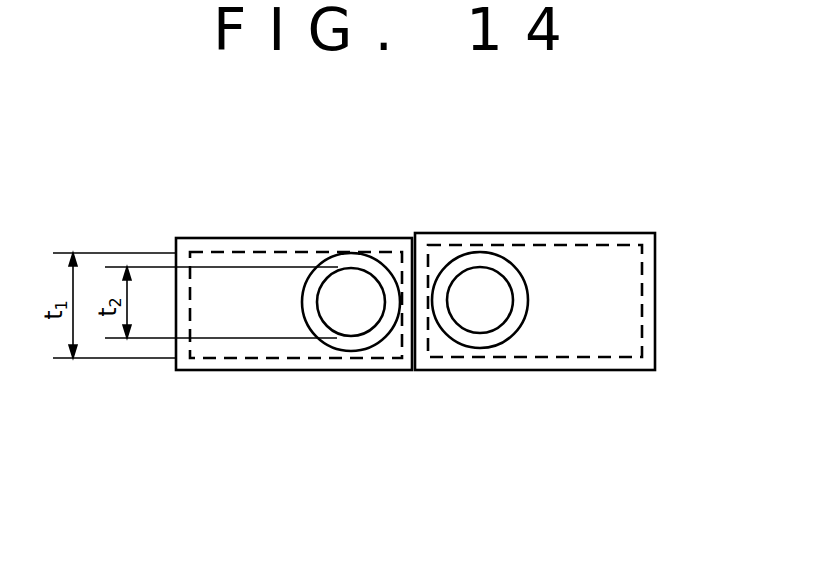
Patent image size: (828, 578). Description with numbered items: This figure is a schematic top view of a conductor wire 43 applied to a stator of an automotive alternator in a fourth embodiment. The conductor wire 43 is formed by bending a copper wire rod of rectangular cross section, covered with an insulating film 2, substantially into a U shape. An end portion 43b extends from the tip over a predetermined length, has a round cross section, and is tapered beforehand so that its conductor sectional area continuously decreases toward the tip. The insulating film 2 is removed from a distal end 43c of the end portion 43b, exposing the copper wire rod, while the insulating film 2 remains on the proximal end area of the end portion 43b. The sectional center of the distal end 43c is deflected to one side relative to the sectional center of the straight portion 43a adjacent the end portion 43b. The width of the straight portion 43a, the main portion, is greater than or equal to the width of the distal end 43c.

The insulating film 2 is at (463, 260).
The conductor wire 43 is at (620, 232).
The straight portion 43a is at (655, 323).
The end portion 43b is at (534, 265).
The distal end 43c is at (480, 280).